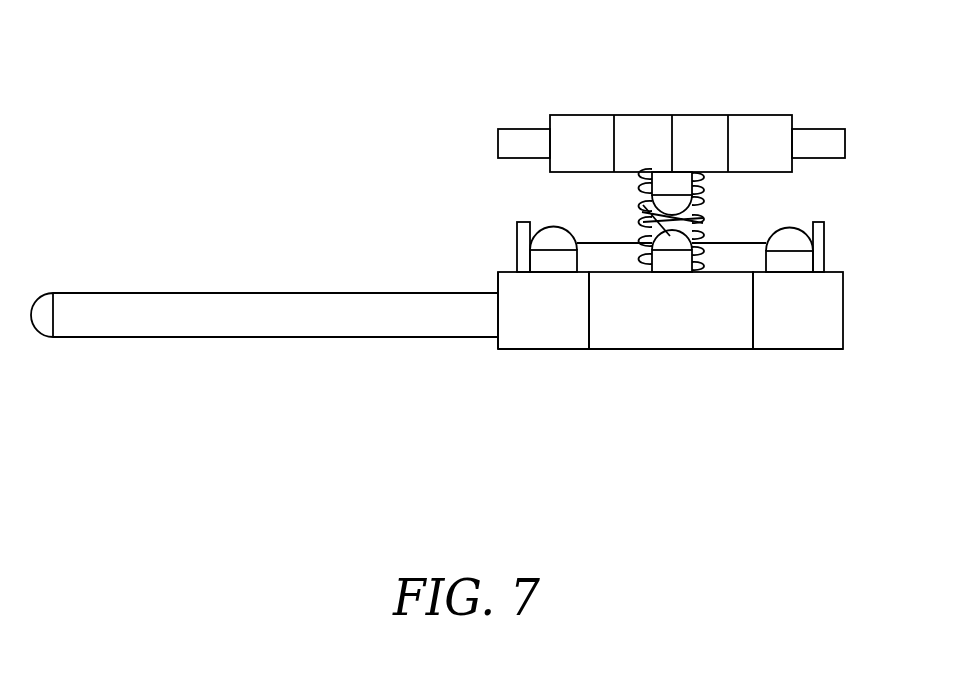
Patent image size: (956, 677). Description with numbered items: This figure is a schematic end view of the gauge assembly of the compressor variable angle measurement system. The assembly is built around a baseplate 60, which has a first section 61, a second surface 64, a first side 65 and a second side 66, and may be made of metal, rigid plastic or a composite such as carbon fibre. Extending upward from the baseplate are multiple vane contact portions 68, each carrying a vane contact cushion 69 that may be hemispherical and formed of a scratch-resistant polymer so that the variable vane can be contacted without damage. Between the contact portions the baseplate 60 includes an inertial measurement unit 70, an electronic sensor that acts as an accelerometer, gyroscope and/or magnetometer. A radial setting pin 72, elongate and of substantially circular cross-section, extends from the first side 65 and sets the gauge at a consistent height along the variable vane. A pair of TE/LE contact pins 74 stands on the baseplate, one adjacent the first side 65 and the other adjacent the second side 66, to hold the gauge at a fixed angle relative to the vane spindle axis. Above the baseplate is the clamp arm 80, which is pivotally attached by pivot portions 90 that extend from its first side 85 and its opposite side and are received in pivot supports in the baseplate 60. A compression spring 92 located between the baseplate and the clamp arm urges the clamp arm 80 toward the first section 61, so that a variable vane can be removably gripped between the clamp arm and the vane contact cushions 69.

The baseplate 60 is at (799, 362).
The first section 61 is at (685, 332).
The second surface 64 is at (517, 349).
The first side 65 is at (497, 282).
The second side 66 is at (845, 310).
The vane contact portion 68 is at (803, 260).
The vane contact cushion 69 is at (655, 204).
The inertial measurement unit 70 is at (726, 243).
The radial setting pin 72 is at (282, 337).
The TE/LE contact pin 74 is at (517, 242).
The clamp arm 80 is at (568, 104).
The first side 85 is at (550, 122).
The pivot portion 90 is at (498, 131).
The spring 92 is at (645, 187).